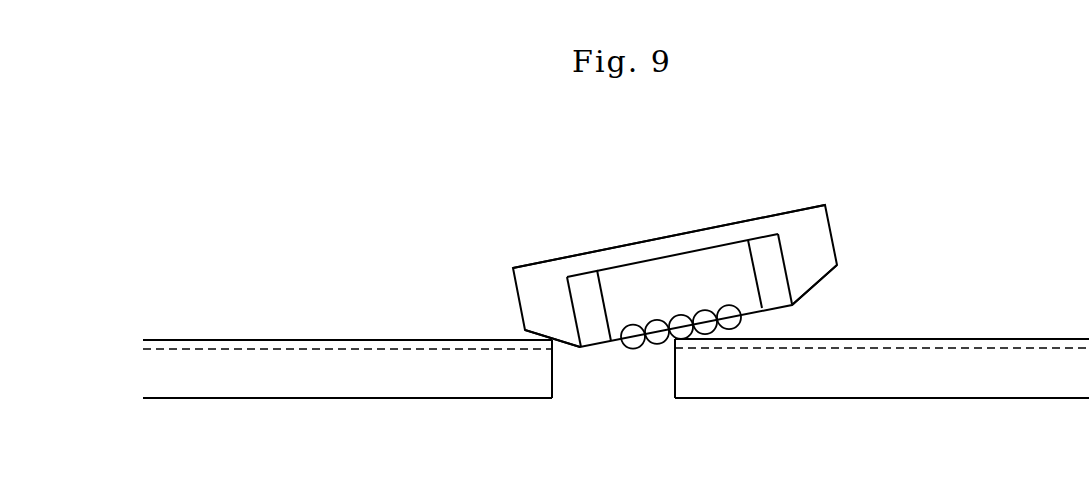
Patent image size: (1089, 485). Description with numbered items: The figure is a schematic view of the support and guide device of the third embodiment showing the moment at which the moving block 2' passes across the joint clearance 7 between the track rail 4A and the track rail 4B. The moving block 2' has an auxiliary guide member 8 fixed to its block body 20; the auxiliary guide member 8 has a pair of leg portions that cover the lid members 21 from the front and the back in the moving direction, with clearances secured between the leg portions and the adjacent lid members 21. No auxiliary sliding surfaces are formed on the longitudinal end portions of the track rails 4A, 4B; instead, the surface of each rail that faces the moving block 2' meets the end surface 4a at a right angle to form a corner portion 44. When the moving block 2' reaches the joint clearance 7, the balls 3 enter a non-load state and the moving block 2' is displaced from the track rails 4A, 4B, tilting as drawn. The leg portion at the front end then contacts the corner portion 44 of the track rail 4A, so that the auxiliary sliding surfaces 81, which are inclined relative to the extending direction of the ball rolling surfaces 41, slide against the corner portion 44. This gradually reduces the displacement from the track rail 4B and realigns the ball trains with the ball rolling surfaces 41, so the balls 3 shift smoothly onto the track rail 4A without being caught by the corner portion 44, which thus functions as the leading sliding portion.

The auxiliary guide member 8 is at (803, 208).
The moving block 2' is at (669, 214).
The block body 20 is at (625, 278).
The lid members 21 is at (588, 340).
The auxiliary sliding surfaces 81 is at (537, 338).
The balls 3 is at (730, 320).
The track rail 4A is at (228, 339).
The track rail 4B is at (1007, 337).
The ball rolling surfaces 41 is at (397, 349).
The corner portion 44 is at (548, 345).
The end surface 4a is at (553, 375).
The joint clearance 7 is at (622, 386).